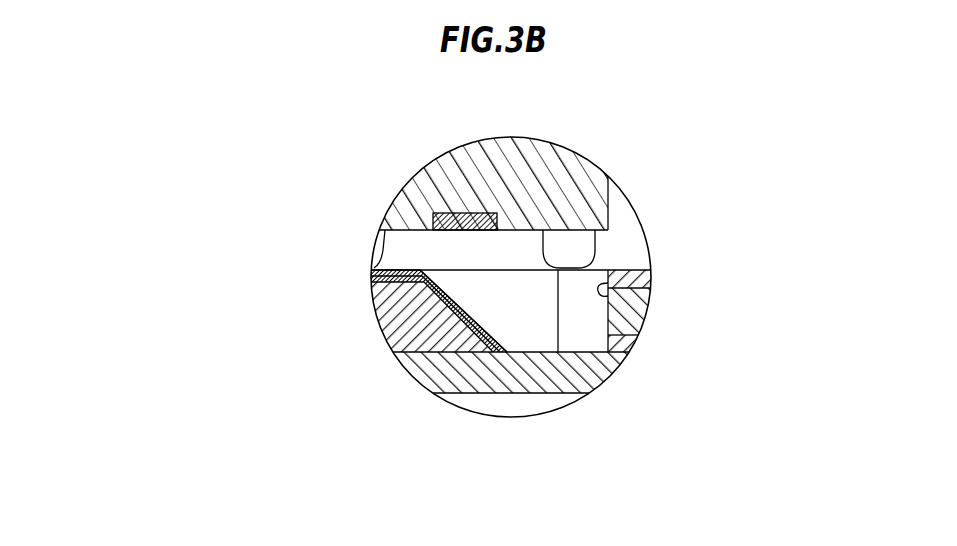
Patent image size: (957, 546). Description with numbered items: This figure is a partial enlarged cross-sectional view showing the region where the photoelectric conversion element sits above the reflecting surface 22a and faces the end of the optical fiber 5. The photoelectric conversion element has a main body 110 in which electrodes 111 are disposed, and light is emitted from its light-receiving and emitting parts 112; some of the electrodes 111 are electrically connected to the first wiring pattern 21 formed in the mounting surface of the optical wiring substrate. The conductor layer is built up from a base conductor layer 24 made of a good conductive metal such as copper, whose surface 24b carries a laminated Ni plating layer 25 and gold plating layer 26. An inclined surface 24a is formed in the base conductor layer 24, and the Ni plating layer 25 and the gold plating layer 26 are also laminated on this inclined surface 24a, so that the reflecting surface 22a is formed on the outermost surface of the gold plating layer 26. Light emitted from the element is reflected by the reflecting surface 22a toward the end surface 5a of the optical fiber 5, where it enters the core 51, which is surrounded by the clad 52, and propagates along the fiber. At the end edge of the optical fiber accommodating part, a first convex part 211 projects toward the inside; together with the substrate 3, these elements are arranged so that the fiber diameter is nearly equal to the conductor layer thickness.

The substrate 3 is at (418, 367).
The optical fiber 5 is at (677, 315).
The end surface 5a is at (634, 271).
The first wiring pattern 21 is at (532, 335).
The reflecting surface 22a is at (450, 270).
The base conductor layer 24 is at (390, 300).
The inclined surface 24a is at (425, 288).
The surface 24b is at (430, 230).
The Ni plating layer 25 is at (427, 388).
The gold plating layer 26 is at (468, 312).
The core 51 is at (632, 308).
The clad 52 is at (632, 336).
The main body 110 is at (420, 188).
The electrodes 111 is at (380, 253).
The light-receiving and emitting parts 112 is at (472, 212).
The first convex part 211 is at (583, 333).